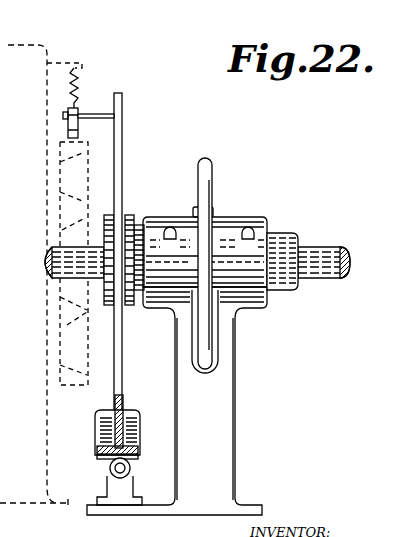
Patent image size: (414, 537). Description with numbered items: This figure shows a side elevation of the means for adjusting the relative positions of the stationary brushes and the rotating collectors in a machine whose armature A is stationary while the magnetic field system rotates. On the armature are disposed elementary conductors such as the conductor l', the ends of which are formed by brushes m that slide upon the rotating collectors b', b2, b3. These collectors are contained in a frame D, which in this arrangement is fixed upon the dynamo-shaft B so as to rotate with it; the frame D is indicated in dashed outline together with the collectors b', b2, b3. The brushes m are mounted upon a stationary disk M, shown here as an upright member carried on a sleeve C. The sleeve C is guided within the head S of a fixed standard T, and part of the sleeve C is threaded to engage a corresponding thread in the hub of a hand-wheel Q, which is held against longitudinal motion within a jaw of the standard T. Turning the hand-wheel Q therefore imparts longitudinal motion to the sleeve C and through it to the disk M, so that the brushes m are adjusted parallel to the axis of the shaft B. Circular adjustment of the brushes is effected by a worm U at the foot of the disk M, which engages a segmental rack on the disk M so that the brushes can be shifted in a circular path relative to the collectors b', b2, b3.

The stationary armature A is at (44, 109).
The elementary conductor l' is at (64, 40).
The brush m is at (78, 117).
The stationary disk M is at (122, 185).
The sleeve C is at (134, 230).
The head S is at (250, 218).
The hand-wheel Q is at (210, 188).
The dynamo-shaft B is at (332, 253).
The fixed standard T is at (218, 430).
The frame D is at (77, 386).
The collector b' is at (49, 177).
The collector b2 is at (72, 233).
The collector b3 is at (72, 332).
The worm U is at (113, 470).